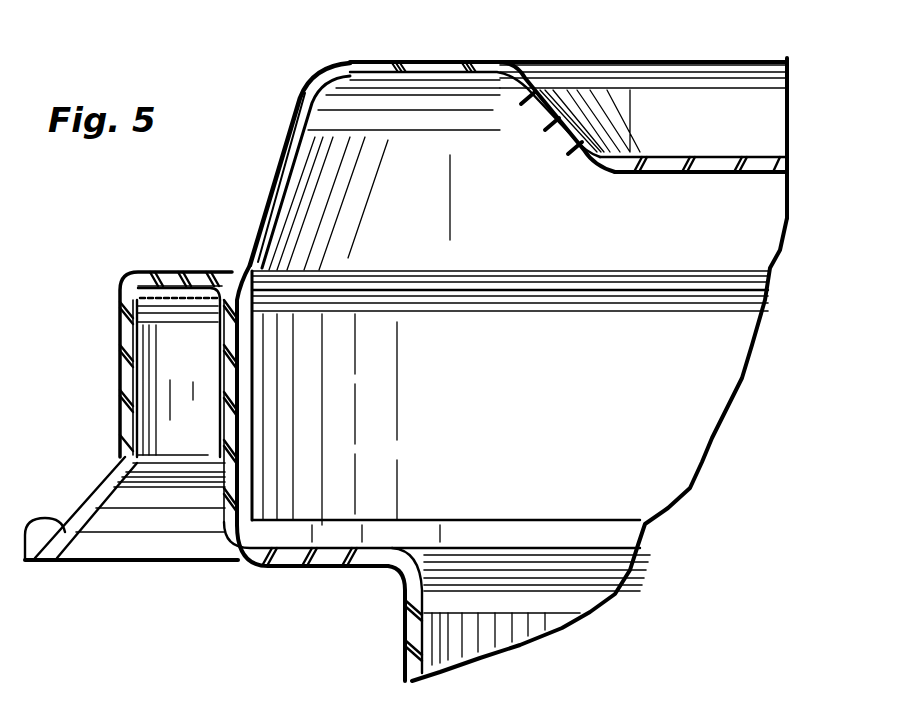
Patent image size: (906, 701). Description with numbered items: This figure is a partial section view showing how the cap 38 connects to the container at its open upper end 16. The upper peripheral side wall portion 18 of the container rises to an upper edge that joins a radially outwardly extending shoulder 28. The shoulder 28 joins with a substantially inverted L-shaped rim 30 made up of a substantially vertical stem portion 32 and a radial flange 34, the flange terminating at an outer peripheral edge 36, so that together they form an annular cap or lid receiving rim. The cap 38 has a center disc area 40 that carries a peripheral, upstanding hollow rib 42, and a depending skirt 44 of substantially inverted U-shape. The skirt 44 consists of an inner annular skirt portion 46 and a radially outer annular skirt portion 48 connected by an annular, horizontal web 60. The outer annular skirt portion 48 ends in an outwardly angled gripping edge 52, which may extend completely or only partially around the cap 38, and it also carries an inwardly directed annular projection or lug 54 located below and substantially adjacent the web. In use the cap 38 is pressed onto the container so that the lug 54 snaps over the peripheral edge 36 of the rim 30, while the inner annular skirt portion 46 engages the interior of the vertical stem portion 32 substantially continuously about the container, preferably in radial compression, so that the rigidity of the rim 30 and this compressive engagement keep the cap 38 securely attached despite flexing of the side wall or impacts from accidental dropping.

The open upper end 16 is at (591, 332).
The upper peripheral side wall portion 18 is at (408, 650).
The shoulder 28 is at (323, 568).
The rim 30 is at (224, 499).
The vertical stem portion 32 is at (220, 415).
The radial flange 34 is at (196, 291).
The outer peripheral edge 36 is at (136, 306).
The cap 38 is at (556, 65).
The center disc area 40 is at (683, 117).
The upstanding hollow rib 42 is at (409, 67).
The depending skirt 44 is at (141, 271).
The inner annular skirt portion 46 is at (245, 415).
The outer annular skirt portion 48 is at (119, 386).
The gripping edge 52 is at (90, 498).
The lug 54 is at (146, 333).
The web 60 is at (162, 282).